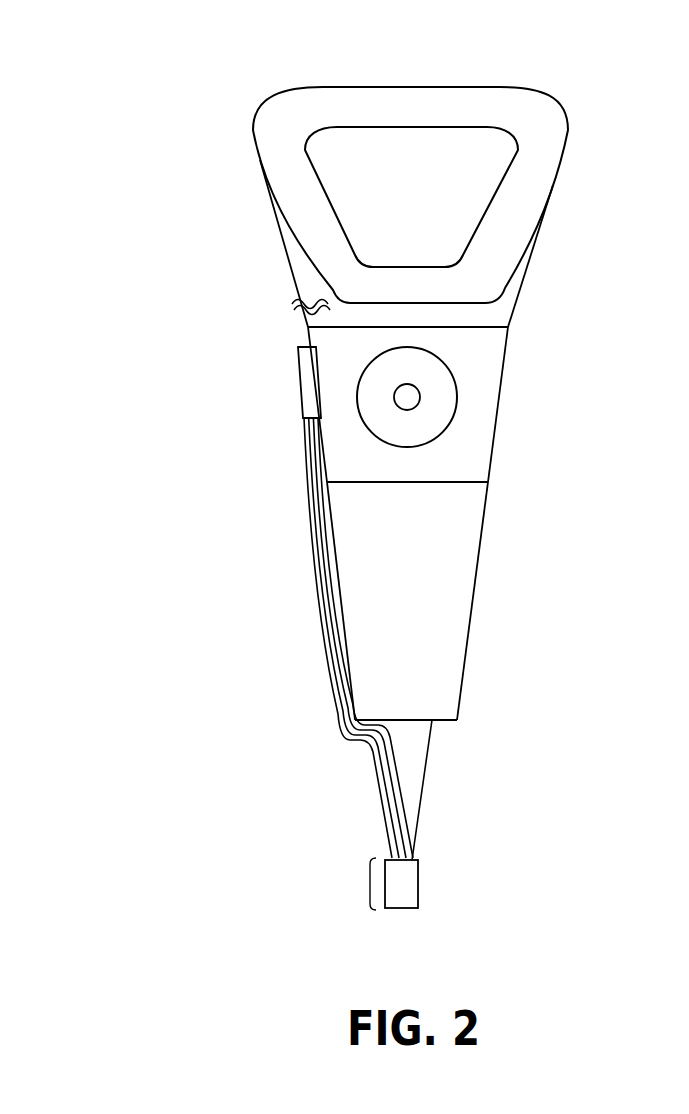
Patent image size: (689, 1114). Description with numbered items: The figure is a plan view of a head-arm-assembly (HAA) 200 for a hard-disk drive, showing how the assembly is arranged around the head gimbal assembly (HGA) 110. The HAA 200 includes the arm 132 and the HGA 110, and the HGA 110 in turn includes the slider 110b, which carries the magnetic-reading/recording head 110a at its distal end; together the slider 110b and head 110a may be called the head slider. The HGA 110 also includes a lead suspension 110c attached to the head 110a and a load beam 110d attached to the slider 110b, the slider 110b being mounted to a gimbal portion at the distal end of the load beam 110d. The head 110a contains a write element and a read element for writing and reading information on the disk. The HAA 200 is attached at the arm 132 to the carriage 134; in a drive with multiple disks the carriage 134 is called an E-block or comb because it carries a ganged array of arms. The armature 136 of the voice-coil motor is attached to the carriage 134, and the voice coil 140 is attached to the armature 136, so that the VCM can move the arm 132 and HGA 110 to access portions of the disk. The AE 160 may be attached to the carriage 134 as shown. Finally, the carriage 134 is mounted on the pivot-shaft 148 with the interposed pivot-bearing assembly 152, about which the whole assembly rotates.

The handheld controller device 200 is at (72, 70).
The voice coil 140 is at (308, 220).
The armature 136 is at (307, 280).
The AE 160 is at (307, 388).
The pivot-shaft 148 is at (407, 397).
The pivot-bearing assembly 152 is at (438, 408).
The carriage 134 is at (462, 448).
The arm 132 is at (403, 562).
The head gimbal assembly 110 is at (212, 682).
The magnetic-reading/recording head 110a is at (392, 898).
The slider 110b is at (368, 883).
The lead suspension 110c is at (382, 797).
The load beam 110d is at (402, 758).